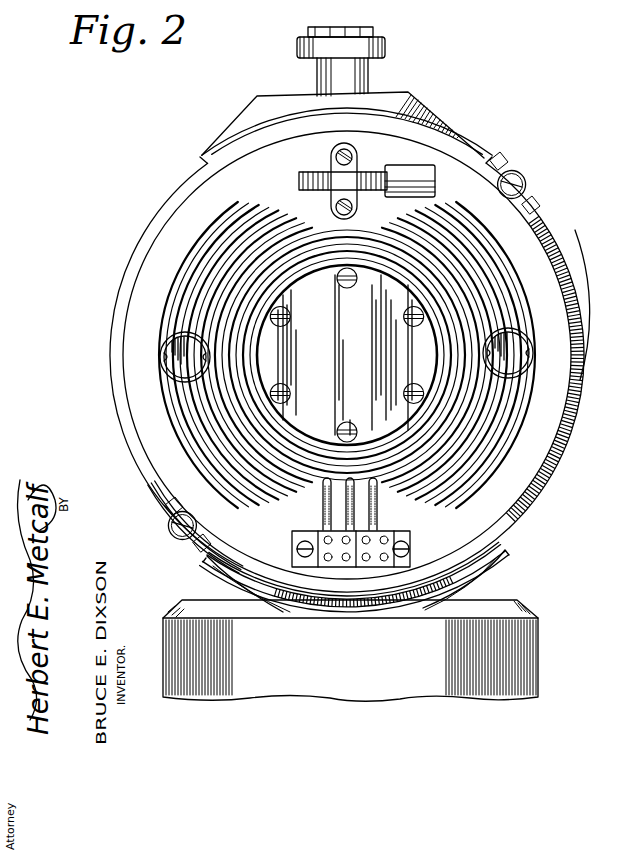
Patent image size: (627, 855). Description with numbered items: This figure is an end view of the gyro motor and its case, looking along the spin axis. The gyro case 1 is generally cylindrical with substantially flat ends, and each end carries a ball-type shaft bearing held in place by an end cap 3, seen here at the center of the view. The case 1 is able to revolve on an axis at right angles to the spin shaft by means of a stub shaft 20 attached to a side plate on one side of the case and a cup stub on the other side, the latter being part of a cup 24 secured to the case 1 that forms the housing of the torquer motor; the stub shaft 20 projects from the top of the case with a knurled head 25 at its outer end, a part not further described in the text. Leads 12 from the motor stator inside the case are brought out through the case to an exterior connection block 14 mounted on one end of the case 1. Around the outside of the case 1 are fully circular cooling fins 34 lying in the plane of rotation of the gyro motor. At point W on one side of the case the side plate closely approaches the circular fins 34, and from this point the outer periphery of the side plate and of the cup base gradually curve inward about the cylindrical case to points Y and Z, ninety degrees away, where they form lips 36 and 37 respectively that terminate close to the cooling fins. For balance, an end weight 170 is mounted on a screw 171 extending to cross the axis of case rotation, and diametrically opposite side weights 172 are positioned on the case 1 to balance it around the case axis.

The gyro case 1 is at (266, 188).
The end cap 3 is at (352, 395).
The leads 12 is at (376, 508).
The connection block 14 is at (398, 531).
The stub shaft 20 is at (369, 80).
The cup 24 is at (404, 672).
The knob 25 is at (385, 49).
The circular cooling fins 34 is at (145, 245).
The lip 36 is at (232, 130).
The lip 37 is at (214, 567).
The end weight 170 is at (408, 172).
The screw 171 is at (356, 170).
The side weights 172 is at (524, 178).
The point W is at (345, 116).
The point Y is at (200, 159).
The point Z is at (480, 162).